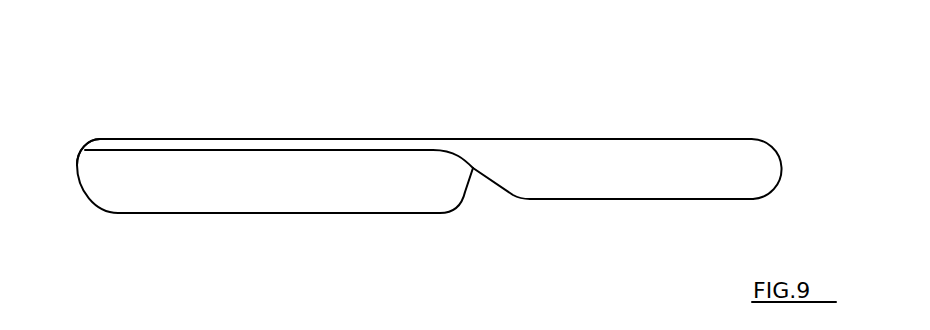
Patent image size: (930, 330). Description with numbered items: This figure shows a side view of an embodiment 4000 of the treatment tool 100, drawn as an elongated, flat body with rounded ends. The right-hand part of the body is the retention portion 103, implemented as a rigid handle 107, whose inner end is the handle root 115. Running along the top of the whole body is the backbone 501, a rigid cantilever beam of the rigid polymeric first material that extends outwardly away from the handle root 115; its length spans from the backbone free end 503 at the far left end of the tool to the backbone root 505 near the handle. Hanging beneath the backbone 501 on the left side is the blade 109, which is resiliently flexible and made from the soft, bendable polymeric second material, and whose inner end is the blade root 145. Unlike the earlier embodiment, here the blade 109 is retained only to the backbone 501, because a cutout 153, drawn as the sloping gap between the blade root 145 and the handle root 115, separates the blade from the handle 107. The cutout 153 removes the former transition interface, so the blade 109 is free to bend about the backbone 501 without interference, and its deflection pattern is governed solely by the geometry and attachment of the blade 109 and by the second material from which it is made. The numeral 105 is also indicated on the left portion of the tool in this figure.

The treatment tool 100 is at (218, 86).
The retention portion 103 is at (614, 108).
The first portion 105 is at (145, 108).
The handle 107 is at (708, 150).
The blade 109 is at (172, 197).
The handle root 115 is at (513, 177).
The blade root 145 is at (437, 197).
The cutout 153 is at (483, 210).
The backbone 501 is at (353, 143).
The backbone free end 503 is at (100, 147).
The backbone root 505 is at (457, 143).
The embodiment 4000 is at (518, 89).